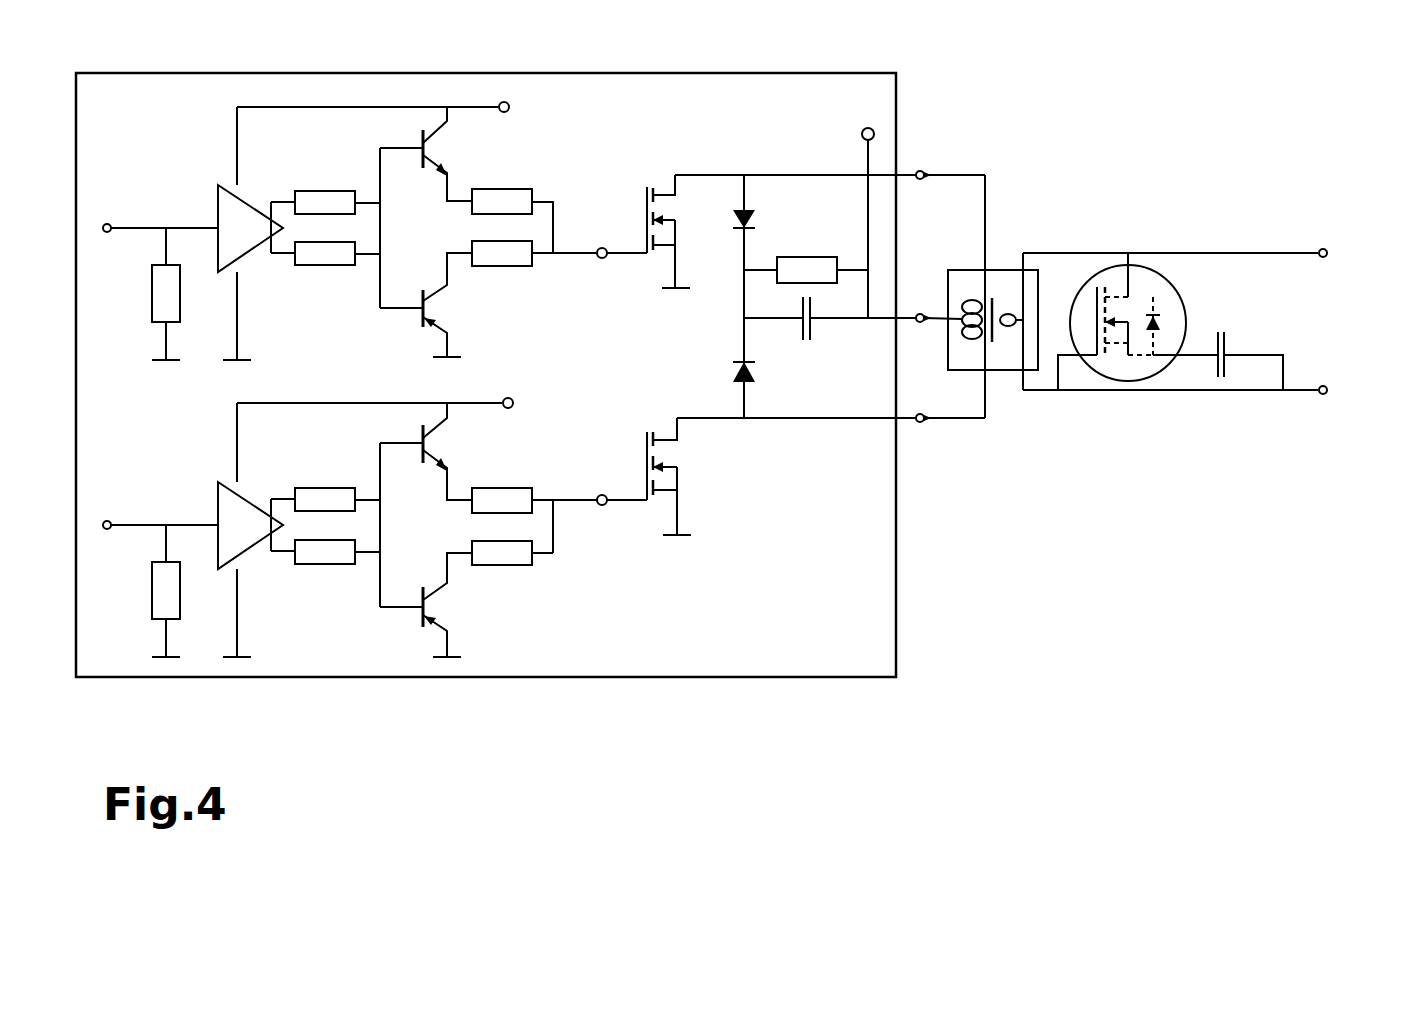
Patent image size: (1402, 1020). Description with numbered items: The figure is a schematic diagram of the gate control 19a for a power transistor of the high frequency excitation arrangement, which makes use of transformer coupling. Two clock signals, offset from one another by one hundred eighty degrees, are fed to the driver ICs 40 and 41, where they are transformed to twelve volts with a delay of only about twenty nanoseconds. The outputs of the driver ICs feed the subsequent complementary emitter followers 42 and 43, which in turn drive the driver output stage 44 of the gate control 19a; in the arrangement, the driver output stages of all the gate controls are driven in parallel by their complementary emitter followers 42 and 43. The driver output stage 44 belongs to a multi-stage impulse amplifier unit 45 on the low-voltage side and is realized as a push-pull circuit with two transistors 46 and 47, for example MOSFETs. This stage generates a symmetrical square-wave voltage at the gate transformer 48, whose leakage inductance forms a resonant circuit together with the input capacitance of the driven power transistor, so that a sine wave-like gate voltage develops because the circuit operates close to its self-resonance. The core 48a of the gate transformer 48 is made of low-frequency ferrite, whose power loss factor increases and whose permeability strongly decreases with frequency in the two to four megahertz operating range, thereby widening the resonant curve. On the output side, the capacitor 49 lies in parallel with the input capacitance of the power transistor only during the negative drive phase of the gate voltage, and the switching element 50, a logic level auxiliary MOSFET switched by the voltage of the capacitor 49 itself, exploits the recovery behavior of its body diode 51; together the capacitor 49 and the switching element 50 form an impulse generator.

The gate control 19a is at (965, 418).
The driver IC 40 is at (245, 237).
The driver IC 41 is at (245, 535).
The complementary emitter follower 42 is at (420, 237).
The complementary emitter follower 43 is at (422, 537).
The driver output stage 44 is at (795, 339).
The multi-stage impulse amplifier unit 45 is at (896, 132).
The transistor 46 is at (650, 278).
The transistor 47 is at (663, 500).
The gate transformer 48 is at (1000, 267).
The core 48a is at (997, 347).
The capacitor 49 is at (1213, 377).
The switching element 50 is at (1107, 277).
The body diode 51 is at (1158, 312).